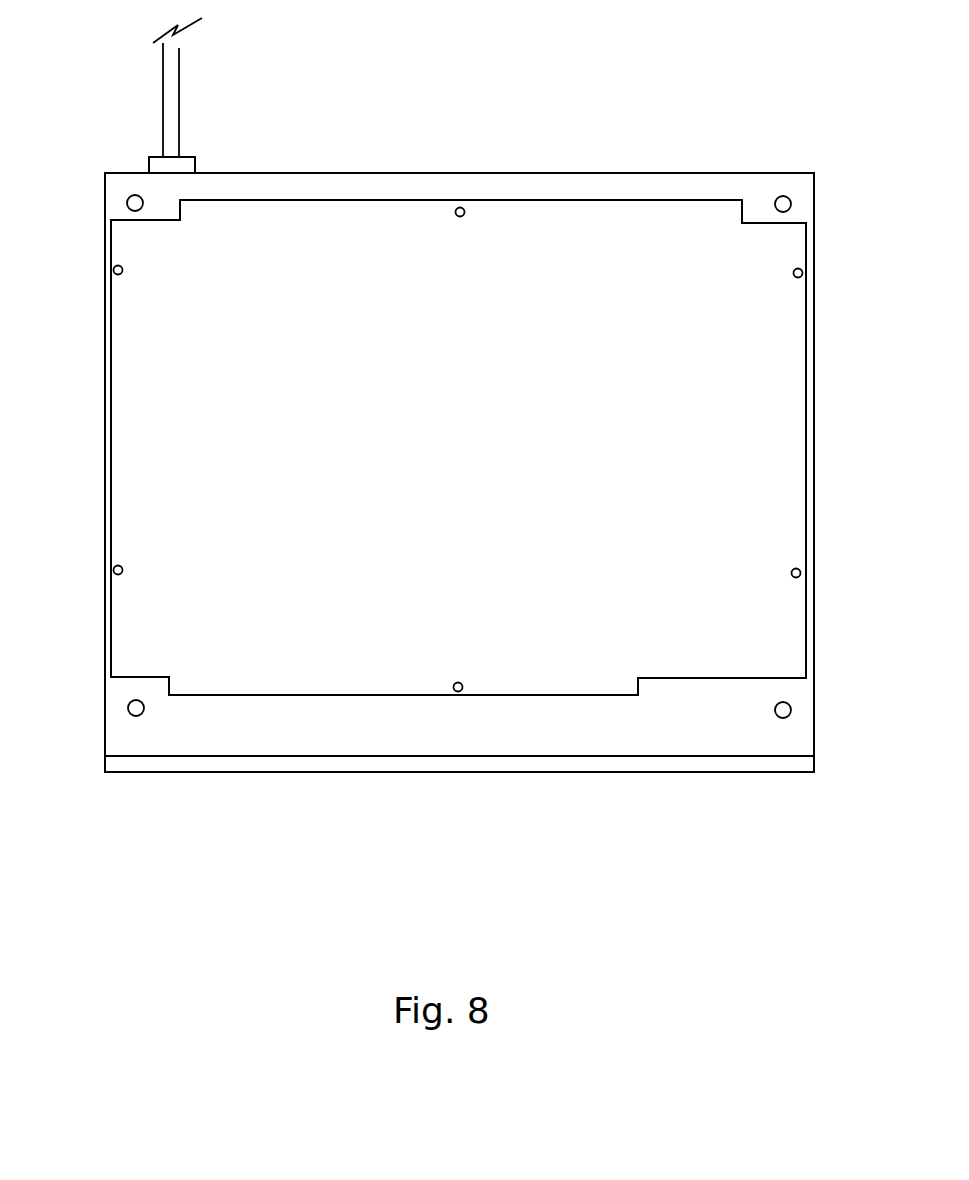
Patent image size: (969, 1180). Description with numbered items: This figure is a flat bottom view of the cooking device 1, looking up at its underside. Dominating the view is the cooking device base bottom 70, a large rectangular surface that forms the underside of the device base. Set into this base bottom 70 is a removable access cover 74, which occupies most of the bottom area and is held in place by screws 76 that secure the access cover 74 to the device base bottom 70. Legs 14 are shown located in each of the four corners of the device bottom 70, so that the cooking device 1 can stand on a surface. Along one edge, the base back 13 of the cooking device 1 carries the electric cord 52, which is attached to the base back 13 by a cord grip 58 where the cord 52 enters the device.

The cooking device 1 is at (500, 785).
The base back 13 is at (362, 172).
The legs 14 is at (130, 200).
The electric cord 52 is at (176, 88).
The cord grip 58 is at (183, 165).
The cooking device base bottom 70 is at (613, 728).
The removable access cover 74 is at (370, 623).
The screws 76 is at (466, 207).